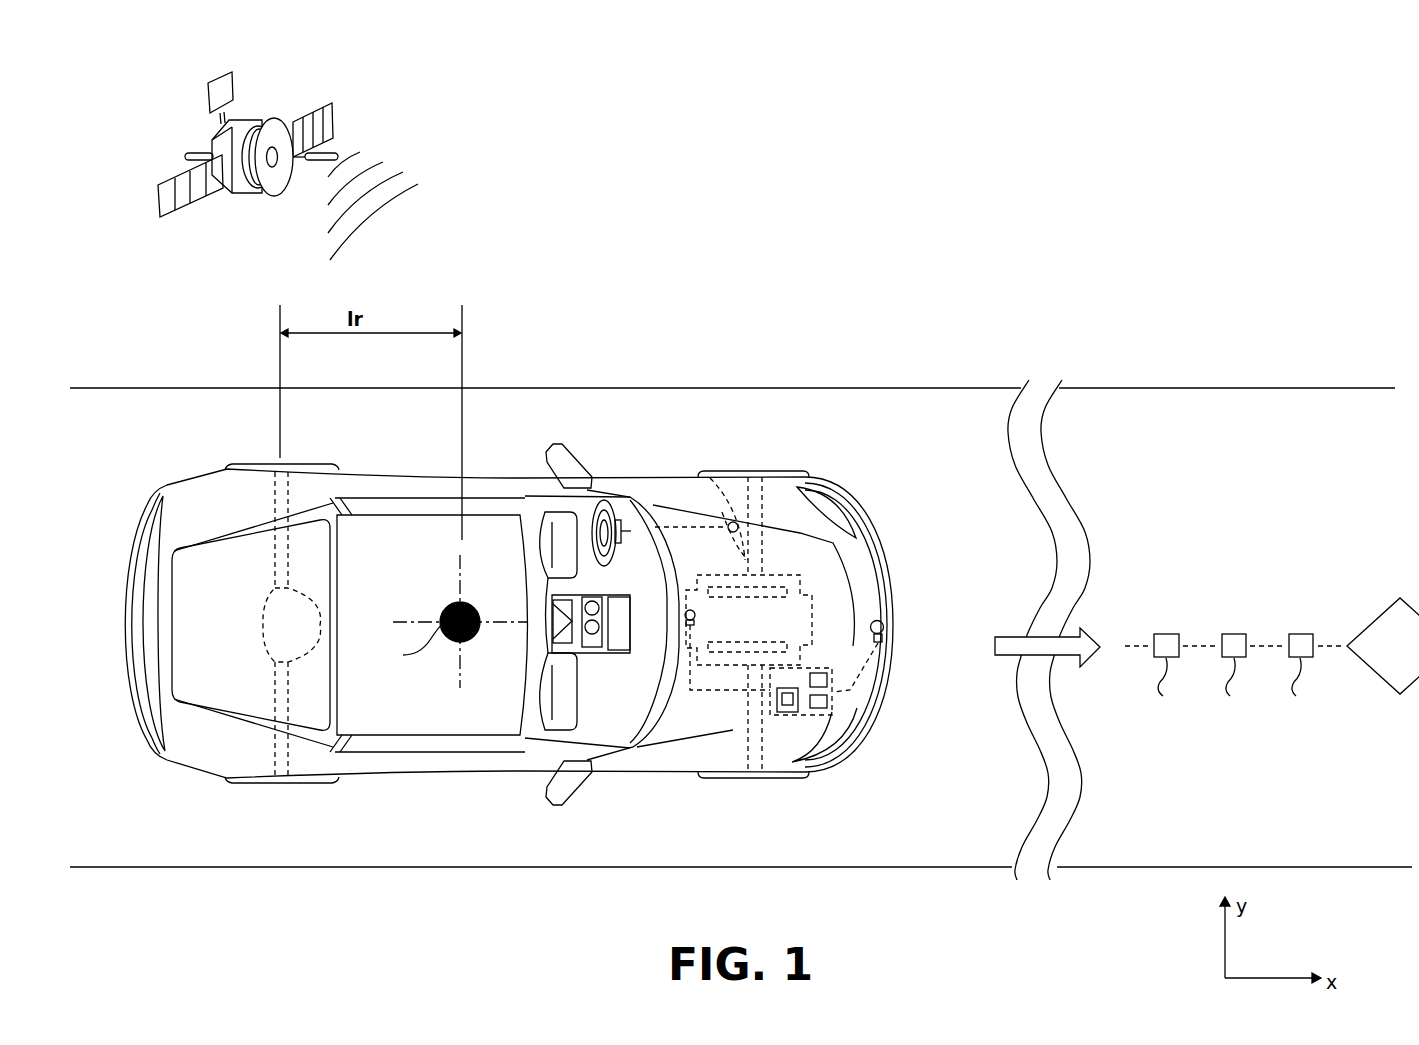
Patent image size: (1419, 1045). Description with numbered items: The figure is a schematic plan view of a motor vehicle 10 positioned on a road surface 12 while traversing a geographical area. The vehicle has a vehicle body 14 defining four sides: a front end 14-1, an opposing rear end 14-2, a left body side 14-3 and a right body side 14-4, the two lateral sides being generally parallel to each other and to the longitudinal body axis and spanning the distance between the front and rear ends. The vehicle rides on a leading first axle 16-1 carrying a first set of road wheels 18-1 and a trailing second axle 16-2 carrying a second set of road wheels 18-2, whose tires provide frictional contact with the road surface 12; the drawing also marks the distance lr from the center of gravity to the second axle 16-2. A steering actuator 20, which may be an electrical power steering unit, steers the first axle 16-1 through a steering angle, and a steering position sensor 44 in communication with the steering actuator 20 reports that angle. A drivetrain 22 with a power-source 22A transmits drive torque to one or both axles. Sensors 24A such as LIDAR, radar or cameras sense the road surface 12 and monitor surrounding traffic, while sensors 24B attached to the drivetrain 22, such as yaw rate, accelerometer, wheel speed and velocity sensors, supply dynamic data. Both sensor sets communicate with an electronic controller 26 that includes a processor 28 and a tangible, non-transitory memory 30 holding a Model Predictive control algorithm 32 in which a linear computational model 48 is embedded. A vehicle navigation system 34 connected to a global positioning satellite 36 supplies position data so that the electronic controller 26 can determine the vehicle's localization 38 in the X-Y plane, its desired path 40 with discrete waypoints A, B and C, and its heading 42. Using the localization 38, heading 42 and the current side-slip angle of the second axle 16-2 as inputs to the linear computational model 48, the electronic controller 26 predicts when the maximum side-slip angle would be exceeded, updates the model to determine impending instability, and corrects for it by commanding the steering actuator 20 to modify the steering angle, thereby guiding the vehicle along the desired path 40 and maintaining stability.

The motor vehicle 10 is at (526, 442).
The road surface 12 is at (100, 428).
The vehicle body 14 is at (633, 472).
The front end 14-1 is at (893, 618).
The rear end 14-2 is at (128, 700).
The left body side 14-3 is at (432, 476).
The right body side 14-4 is at (420, 772).
The first axle 16-1 is at (757, 727).
The second axle 16-2 is at (278, 742).
The first set of road wheels 18-1 is at (800, 474).
The second set of road wheels 18-2 is at (263, 467).
The steering actuator 20 is at (660, 538).
The drivetrain 22 is at (812, 624).
The power-source 22A is at (747, 619).
The sensor 24A is at (886, 628).
The sensors attached to the vehicle drivetrain 24B is at (690, 620).
The electronic controller 26 is at (857, 710).
The processor 28 is at (832, 700).
The tangible, non-transitory memory 30 is at (832, 674).
The Model Predictive control algorithm 32 is at (792, 712).
The vehicle navigation system 34 is at (633, 505).
The global positioning satellite 36 is at (346, 121).
The localization 38 is at (462, 680).
The desired path 40 is at (1278, 645).
The heading 42 is at (1048, 660).
The steering position sensor 44 is at (730, 521).
The linear computational model 48 is at (800, 712).